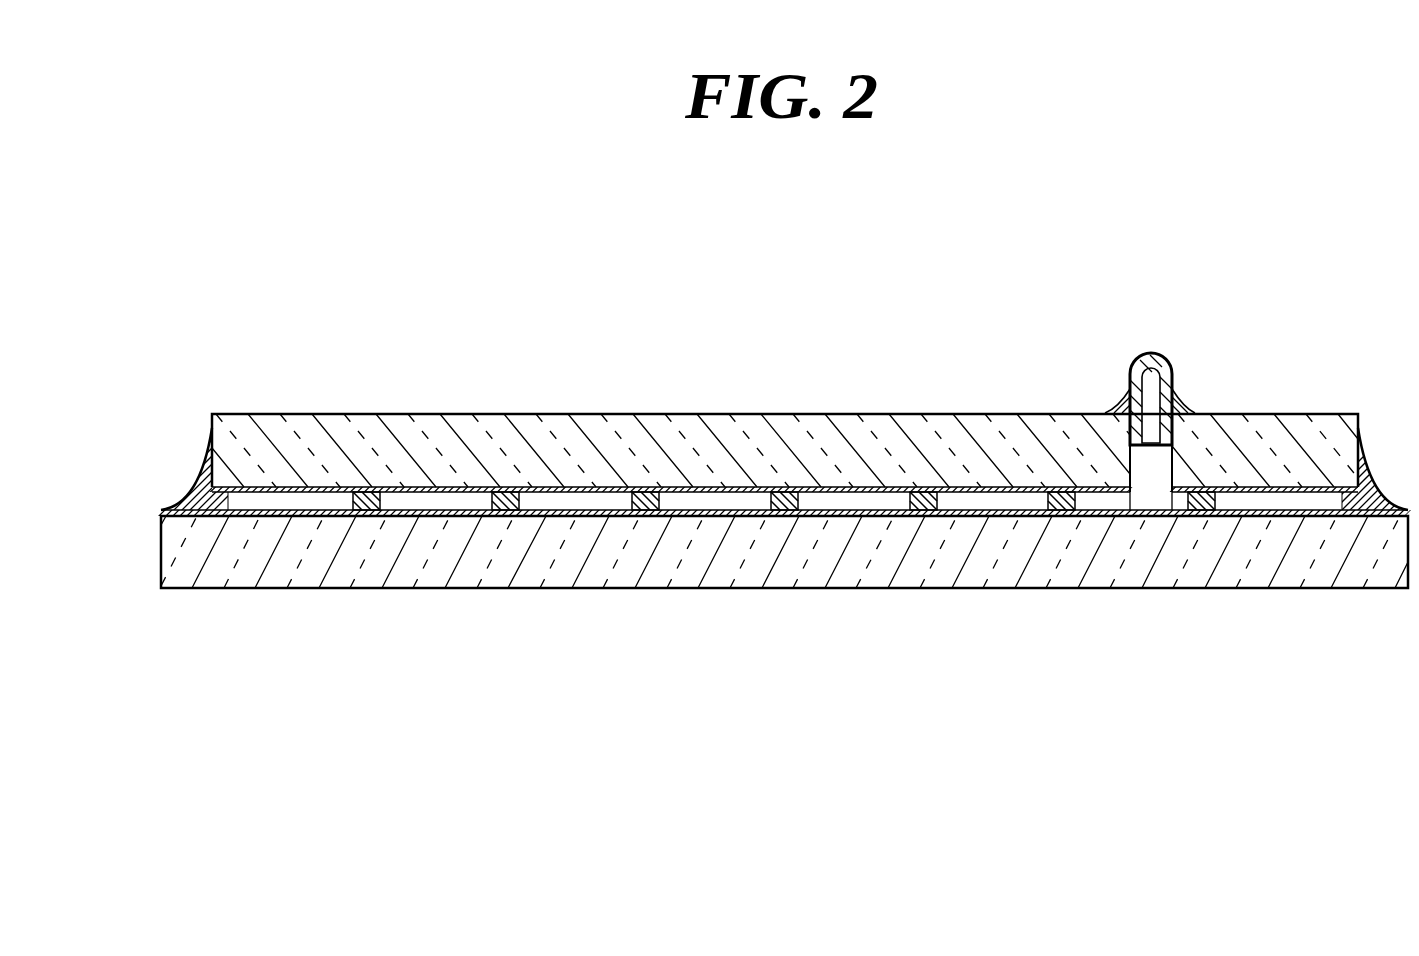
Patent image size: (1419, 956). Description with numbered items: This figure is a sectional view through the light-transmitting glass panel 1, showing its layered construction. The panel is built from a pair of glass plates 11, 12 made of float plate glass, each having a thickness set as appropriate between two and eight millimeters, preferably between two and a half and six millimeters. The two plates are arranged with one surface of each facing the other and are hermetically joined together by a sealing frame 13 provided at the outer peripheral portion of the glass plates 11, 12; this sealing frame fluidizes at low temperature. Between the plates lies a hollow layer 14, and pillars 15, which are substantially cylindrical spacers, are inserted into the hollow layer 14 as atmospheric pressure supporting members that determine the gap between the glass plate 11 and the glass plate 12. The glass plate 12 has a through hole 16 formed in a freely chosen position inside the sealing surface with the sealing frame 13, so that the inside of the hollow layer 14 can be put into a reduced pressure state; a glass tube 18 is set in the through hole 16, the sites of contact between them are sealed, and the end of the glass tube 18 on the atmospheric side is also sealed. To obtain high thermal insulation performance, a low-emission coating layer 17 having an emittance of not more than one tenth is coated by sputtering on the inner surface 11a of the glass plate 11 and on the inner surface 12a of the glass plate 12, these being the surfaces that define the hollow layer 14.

The light-transmitting glass panel 1 is at (433, 344).
The glass plate 11 is at (855, 590).
The inner surface of the glass plate 11a is at (1013, 510).
The glass plate 12 is at (718, 414).
The inner surface of the glass plate 12a is at (830, 492).
The sealing frame 13 is at (187, 492).
The hollow layer 14 is at (563, 500).
The pillar 15 is at (620, 497).
The through hole 16 is at (1156, 462).
The low-emission coating layer 17 is at (972, 485).
The glass tube 18 is at (1152, 352).